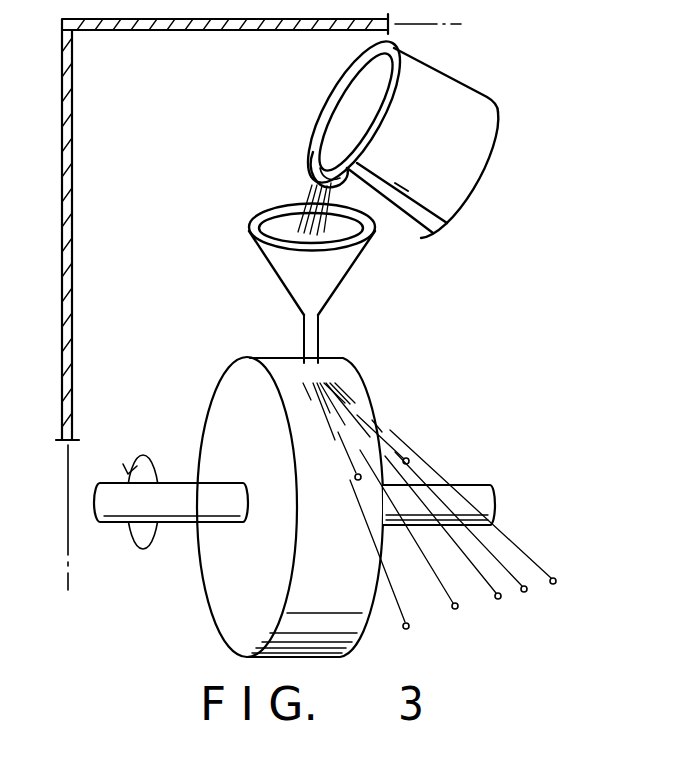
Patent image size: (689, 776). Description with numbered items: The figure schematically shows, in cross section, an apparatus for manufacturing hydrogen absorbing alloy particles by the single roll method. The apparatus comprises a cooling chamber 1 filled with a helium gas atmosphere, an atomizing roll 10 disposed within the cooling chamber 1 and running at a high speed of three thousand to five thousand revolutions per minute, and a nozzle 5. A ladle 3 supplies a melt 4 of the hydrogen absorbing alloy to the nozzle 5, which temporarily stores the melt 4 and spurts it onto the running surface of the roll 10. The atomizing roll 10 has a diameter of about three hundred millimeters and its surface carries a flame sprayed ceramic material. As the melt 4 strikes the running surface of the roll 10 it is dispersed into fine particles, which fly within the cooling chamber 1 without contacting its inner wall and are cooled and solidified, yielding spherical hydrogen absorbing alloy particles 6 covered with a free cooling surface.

The cooling chamber 1 is at (62, 293).
The ladle 3 is at (467, 91).
The melt 4 is at (340, 148).
The nozzle 5 is at (319, 332).
The atomizing roll 10 is at (353, 397).
The hydrogen absorbing alloy particles 6 is at (502, 600).